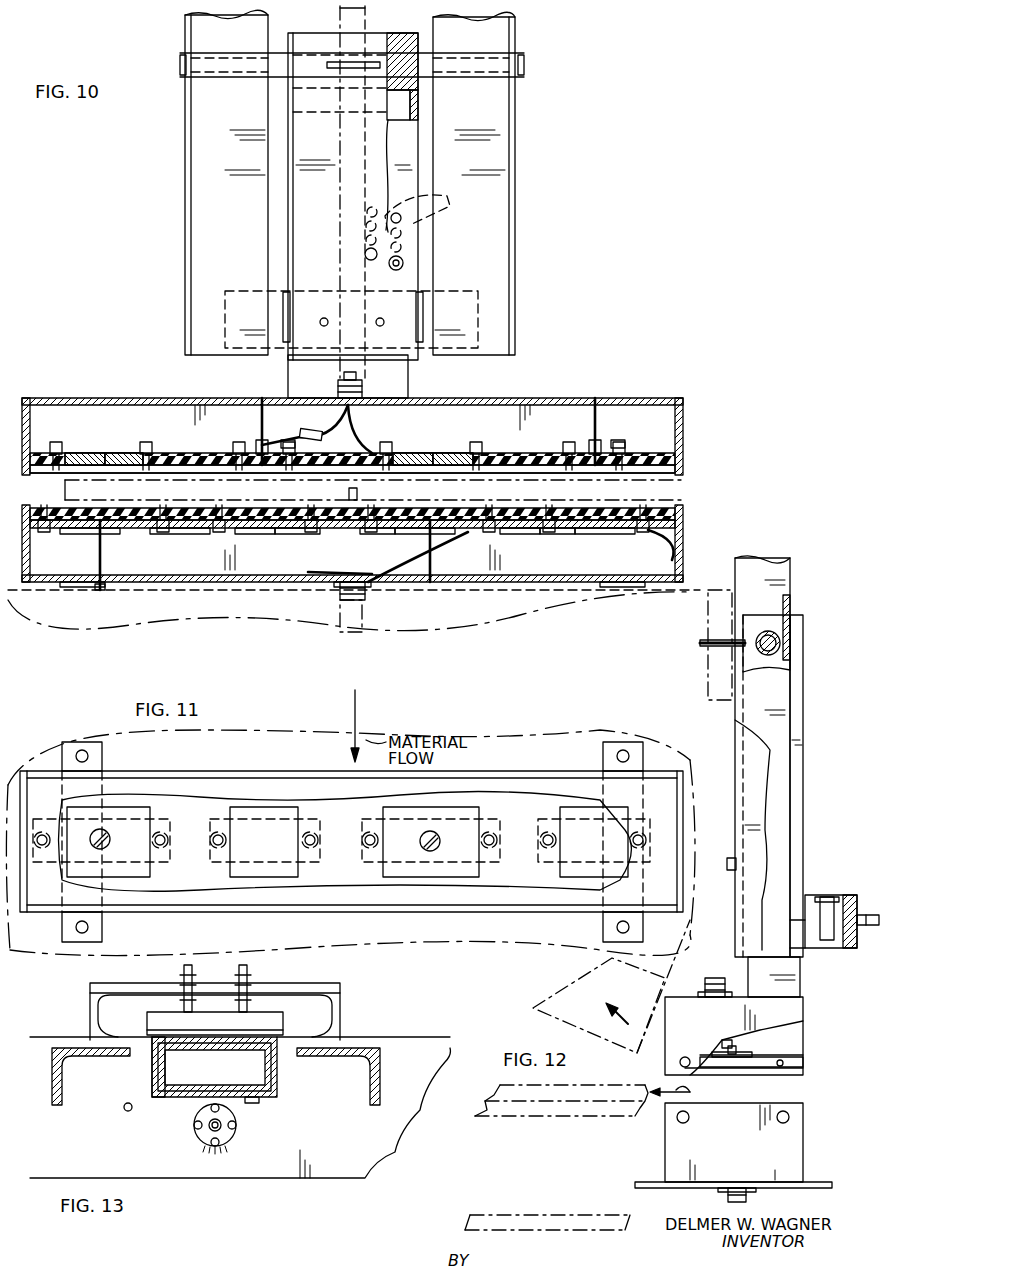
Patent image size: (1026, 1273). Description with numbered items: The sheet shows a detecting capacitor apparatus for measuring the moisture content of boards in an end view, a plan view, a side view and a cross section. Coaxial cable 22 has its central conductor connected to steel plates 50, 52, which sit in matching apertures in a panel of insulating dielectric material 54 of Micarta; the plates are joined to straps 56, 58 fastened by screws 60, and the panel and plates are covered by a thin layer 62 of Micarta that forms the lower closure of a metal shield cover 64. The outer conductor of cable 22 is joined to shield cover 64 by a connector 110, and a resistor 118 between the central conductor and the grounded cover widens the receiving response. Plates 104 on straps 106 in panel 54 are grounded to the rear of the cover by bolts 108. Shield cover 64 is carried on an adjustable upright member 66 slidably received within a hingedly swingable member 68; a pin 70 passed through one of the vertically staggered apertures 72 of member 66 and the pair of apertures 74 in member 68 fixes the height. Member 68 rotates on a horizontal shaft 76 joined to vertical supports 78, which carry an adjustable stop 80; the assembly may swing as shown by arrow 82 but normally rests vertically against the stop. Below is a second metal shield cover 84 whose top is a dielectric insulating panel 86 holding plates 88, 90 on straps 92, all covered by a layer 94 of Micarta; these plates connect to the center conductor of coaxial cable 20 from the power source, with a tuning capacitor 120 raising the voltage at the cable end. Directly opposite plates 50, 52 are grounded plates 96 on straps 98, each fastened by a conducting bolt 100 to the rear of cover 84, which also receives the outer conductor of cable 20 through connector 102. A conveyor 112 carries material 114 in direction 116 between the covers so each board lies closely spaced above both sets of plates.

In FIG. 10, the coaxial cable 20 is at (362, 620).
In FIG. 10, the coaxial cable 22 is at (366, 372).
In FIG. 12, the coaxial cable 22 is at (707, 676).
In FIG. 10, the plate 50 is at (85, 453).
In FIG. 10, the plate 52 is at (418, 453).
In FIG. 10, the panel of insulating dielectric material 54 is at (262, 418).
In FIG. 12, the panel of insulating dielectric material 54 is at (766, 1062).
In FIG. 10, the strap 56 is at (122, 453).
In FIG. 10, the strap 58 is at (452, 453).
In FIG. 10, the screws 60 is at (645, 532).
In FIG. 11, the screws 60 is at (318, 838).
In FIG. 12, the screws 60 is at (722, 1046).
In FIG. 10, the thin layer of Micarta 62 is at (455, 468).
In FIG. 12, the thin layer of Micarta 62 is at (796, 1072).
In FIG. 10, the metal shield cover 64 is at (610, 398).
In FIG. 12, the metal shield cover 64 is at (803, 1040).
In FIG. 10, the adjustable upright member 66 is at (288, 372).
In FIG. 12, the adjustable upright member 66 is at (748, 972).
In FIG. 13, the adjustable upright member 66 is at (183, 1097).
In FIG. 10, the hingedly swingable member 68 is at (288, 212).
In FIG. 12, the hingedly swingable member 68 is at (735, 796).
In FIG. 13, the hingedly swingable member 68 is at (152, 1087).
In FIG. 10, the pin 70 is at (404, 264).
In FIG. 12, the pin 70 is at (727, 863).
In FIG. 13, the pin 70 is at (259, 1101).
In FIG. 10, the vertically staggered apertures 72 is at (403, 216).
In FIG. 10, the pair of apertures 74 is at (380, 268).
In FIG. 10, the horizontal shaft 76 is at (286, 53).
In FIG. 12, the horizontal shaft 76 is at (780, 631).
In FIG. 10, the vertical supports 78 is at (185, 148).
In FIG. 13, the vertical supports 78 is at (70, 1048).
In FIG. 12, the adjustable stop 80 is at (803, 950).
In FIG. 13, the adjustable stop 80 is at (270, 1012).
In FIG. 12, the arrow 82 is at (611, 986).
In FIG. 10, the second metal shield cover 84 is at (683, 538).
In FIG. 11, the second metal shield cover 84 is at (140, 770).
In FIG. 12, the second metal shield cover 84 is at (803, 1160).
In FIG. 10, the dielectric insulating panel 86 is at (520, 508).
In FIG. 11, the dielectric insulating panel 86 is at (302, 797).
In FIG. 10, the plate 88 is at (293, 534).
In FIG. 11, the plate 88 is at (257, 807).
In FIG. 10, the plate 90 is at (590, 508).
In FIG. 11, the plate 90 is at (574, 807).
In FIG. 10, the straps 92 is at (262, 534).
In FIG. 11, the straps 92 is at (300, 870).
In FIG. 10, the layer of Micarta 94 is at (172, 502).
In FIG. 11, the layer of Micarta 94 is at (338, 785).
In FIG. 10, the plates 96 is at (165, 534).
In FIG. 11, the plates 96 is at (130, 877).
In FIG. 10, the straps 98 is at (90, 534).
In FIG. 11, the straps 98 is at (172, 820).
In FIG. 10, the bolt 100 is at (100, 540).
In FIG. 11, the bolt 100 is at (108, 838).
In FIG. 10, the connector 102 is at (338, 592).
In FIG. 12, the connector 102 is at (748, 1198).
In FIG. 10, the plates 104 is at (296, 444).
In FIG. 10, the straps 106 is at (258, 440).
In FIG. 12, the straps 106 is at (752, 1056).
In FIG. 10, the bolts 108 is at (262, 400).
In FIG. 12, the bolts 108 is at (732, 1046).
In FIG. 10, the connector 110 is at (364, 393).
In FIG. 12, the connector 110 is at (710, 984).
In FIG. 13, the connector 110 is at (231, 1134).
In FIG. 12, the conveyor 112 is at (585, 1118).
In FIG. 10, the material 114 is at (358, 493).
In FIG. 12, the material 114 is at (585, 1085).
In FIG. 12, the direction 116 is at (689, 1094).
In FIG. 10, the resistor 118 is at (318, 430).
In FIG. 10, the tuning capacitor 120 is at (398, 582).